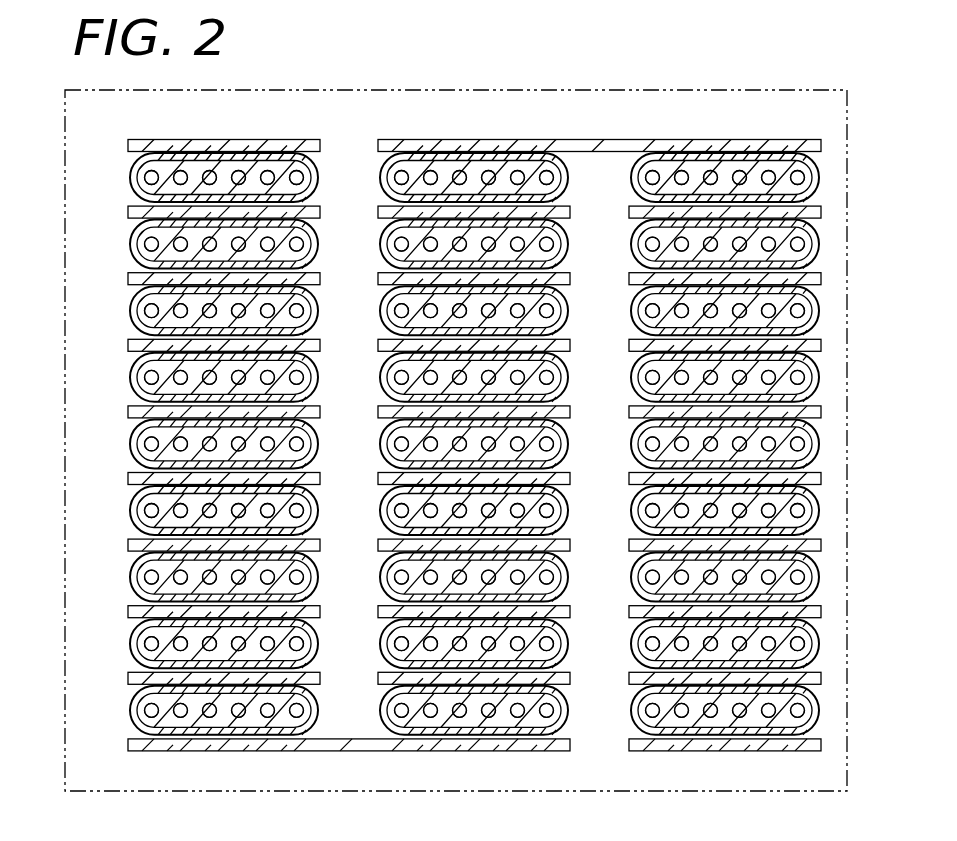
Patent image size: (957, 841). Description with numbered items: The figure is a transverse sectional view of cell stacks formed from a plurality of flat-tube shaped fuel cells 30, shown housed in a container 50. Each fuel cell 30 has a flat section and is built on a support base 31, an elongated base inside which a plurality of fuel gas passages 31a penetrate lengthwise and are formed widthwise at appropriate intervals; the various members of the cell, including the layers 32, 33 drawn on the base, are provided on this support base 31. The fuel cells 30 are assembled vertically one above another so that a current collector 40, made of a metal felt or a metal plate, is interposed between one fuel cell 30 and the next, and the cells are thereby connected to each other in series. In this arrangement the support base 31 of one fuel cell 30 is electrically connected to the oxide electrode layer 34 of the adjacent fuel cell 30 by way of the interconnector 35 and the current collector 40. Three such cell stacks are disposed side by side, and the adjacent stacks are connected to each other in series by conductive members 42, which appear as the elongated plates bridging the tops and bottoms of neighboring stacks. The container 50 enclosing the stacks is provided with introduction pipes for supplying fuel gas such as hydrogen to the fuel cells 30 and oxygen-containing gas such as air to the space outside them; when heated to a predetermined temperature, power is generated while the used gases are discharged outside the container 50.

The container 50 is at (725, 101).
The conductive member 42 is at (600, 140).
The current collector 40 is at (267, 146).
The fuel cell 30 is at (419, 419).
The support base 31 is at (136, 184).
The fuel gas passage 31a is at (210, 172).
The electrolyte layer 32 is at (130, 588).
The outer casing 33 is at (135, 165).
The oxide electrode layer 34 is at (128, 272).
The interconnector 35 is at (307, 318).